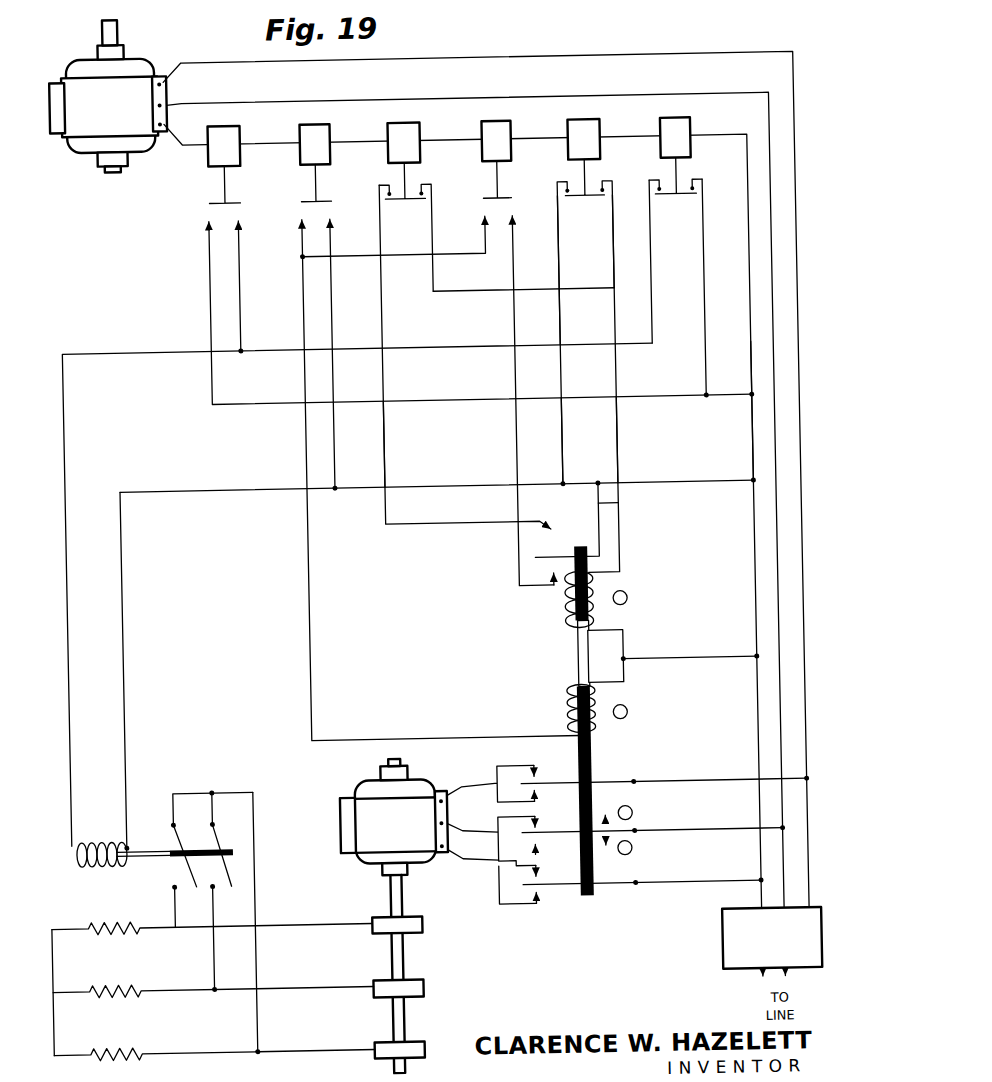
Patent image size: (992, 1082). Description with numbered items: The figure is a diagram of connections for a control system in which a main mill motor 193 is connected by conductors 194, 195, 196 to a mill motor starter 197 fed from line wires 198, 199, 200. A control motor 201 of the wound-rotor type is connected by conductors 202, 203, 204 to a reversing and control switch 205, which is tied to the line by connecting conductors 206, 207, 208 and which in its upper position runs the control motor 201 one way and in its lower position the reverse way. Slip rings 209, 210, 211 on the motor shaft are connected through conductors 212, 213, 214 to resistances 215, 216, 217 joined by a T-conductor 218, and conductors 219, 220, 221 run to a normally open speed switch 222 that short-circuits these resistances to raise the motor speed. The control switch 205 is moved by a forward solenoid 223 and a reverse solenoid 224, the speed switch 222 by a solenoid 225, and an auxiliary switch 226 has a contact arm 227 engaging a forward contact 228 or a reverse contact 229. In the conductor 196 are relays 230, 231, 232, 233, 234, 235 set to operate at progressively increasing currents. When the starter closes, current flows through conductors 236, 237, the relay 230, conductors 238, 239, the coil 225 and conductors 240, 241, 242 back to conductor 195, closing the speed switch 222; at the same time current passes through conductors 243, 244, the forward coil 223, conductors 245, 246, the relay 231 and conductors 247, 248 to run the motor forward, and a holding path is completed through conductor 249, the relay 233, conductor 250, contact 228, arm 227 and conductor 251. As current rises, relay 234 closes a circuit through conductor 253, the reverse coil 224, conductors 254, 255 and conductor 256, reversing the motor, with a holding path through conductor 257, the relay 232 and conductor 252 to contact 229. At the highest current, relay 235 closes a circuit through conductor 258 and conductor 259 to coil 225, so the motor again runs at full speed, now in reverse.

The main mill motor 193 is at (147, 55).
The conductor 194 is at (227, 57).
The conductor 195 is at (385, 98).
The conductor 196 is at (452, 138).
The mill motor starter 197 is at (715, 922).
The line wire 198 is at (800, 981).
The line wire 199 is at (719, 965).
The line wire 200 is at (750, 980).
The control motor 201 is at (363, 781).
The conductor 202 is at (467, 769).
The conductor 203 is at (466, 831).
The conductor 204 is at (464, 862).
The reversing and control switch 205 is at (588, 772).
The connecting conductor 206 is at (693, 784).
The connecting conductor 207 is at (692, 833).
The connecting conductor 208 is at (702, 885).
The slip ring 209 is at (415, 924).
The slip ring 210 is at (415, 986).
The slip ring 211 is at (410, 1046).
The conductor 212 is at (320, 909).
The conductor 213 is at (327, 970).
The conductor 214 is at (336, 1031).
The resistance 215 is at (116, 902).
The resistance 216 is at (116, 982).
The resistance 217 is at (129, 1024).
The T-conductor 218 is at (53, 981).
The conductor 219 is at (168, 900).
The conductor 220 is at (208, 954).
The conductor 221 is at (251, 905).
The speed switch 222 is at (223, 847).
The forward solenoid 223 is at (592, 586).
The reverse solenoid 224 is at (593, 699).
The solenoid 225 is at (72, 849).
The auxiliary switch 226 is at (559, 552).
The contact arm 227 is at (590, 548).
The forward contact 228 is at (523, 535).
The reverse contact 229 is at (557, 586).
The relay 230 is at (690, 124).
The relay 231 is at (613, 130).
The relay 232 is at (515, 133).
The relay 233 is at (413, 112).
The relay 234 is at (321, 131).
The relay 235 is at (248, 136).
The conductor 236 is at (717, 398).
The conductor 237 is at (712, 321).
The conductor 238 is at (658, 309).
The conductor 239 is at (67, 430).
The conductor 240 is at (122, 537).
The conductor 241 is at (456, 472).
The conductor 242 is at (690, 483).
The conductor 243 is at (688, 661).
The conductor 244 is at (621, 648).
The conductor 245 is at (620, 446).
The conductor 246 is at (619, 252).
The conductor 247 is at (565, 263).
The conductor 248 is at (576, 485).
The conductor 249 is at (472, 292).
The conductor 250 is at (387, 453).
The conductor 251 is at (605, 505).
The conductor 252 is at (519, 432).
The conductor 253 is at (621, 673).
The conductor 254 is at (311, 660).
The conductor 255 is at (309, 247).
The conductor 256 is at (350, 456).
The conductor 257 is at (360, 259).
The conductor 258 is at (242, 400).
The conductor 259 is at (245, 323).